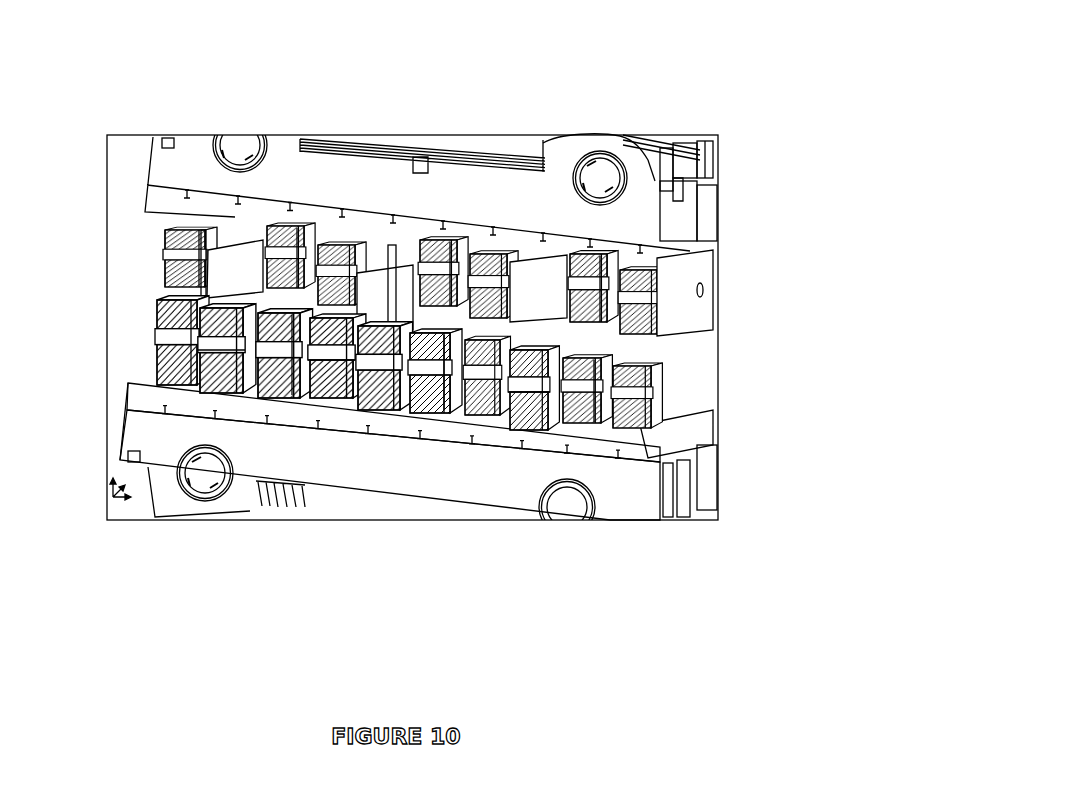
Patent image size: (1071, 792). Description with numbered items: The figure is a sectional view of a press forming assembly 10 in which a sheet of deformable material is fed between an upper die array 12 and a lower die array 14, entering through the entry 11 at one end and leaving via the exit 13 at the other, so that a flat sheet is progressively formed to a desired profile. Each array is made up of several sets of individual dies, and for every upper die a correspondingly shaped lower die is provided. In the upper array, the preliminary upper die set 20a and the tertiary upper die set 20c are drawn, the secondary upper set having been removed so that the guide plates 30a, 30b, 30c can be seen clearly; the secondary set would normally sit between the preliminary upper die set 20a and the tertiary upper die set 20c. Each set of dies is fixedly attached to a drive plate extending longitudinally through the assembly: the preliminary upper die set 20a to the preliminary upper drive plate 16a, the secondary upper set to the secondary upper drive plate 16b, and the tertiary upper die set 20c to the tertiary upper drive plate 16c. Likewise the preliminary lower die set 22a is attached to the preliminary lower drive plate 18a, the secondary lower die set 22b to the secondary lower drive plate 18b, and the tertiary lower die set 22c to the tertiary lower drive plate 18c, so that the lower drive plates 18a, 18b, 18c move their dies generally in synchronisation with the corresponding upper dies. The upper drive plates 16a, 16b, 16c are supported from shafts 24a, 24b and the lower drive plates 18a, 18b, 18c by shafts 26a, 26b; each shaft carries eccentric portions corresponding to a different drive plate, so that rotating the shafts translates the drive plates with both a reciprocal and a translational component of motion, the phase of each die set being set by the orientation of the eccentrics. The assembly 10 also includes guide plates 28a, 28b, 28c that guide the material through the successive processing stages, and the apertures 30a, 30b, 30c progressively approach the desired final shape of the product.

The press forming assembly 10 is at (407, 331).
The entry 11 is at (364, 159).
The upper die array 12 is at (366, 180).
The exit 13 is at (731, 316).
The lower die array 14 is at (379, 467).
The preliminary upper drive plate 16a is at (710, 153).
The secondary upper drive plate 16b is at (700, 175).
The tertiary upper drive plate 16c is at (716, 222).
The preliminary lower drive plate 18a is at (710, 462).
The secondary lower drive plate 18b is at (700, 487).
The tertiary lower drive plate 18c is at (663, 510).
The preliminary upper die set 20a is at (180, 233).
The tertiary upper die set 20c is at (262, 235).
The preliminary lower die set 22a is at (168, 372).
The secondary lower die set 22b is at (232, 395).
The tertiary lower die set 22c is at (287, 387).
The shaft 24a is at (238, 147).
The shaft 24b is at (592, 172).
The shaft 26a is at (208, 478).
The shaft 26b is at (572, 512).
The guide plate 28a is at (195, 242).
The guide plate 28b is at (395, 275).
The guide plate 28c is at (698, 353).
The aperture 30a is at (232, 295).
The aperture 30b is at (412, 300).
The aperture 30c is at (532, 262).